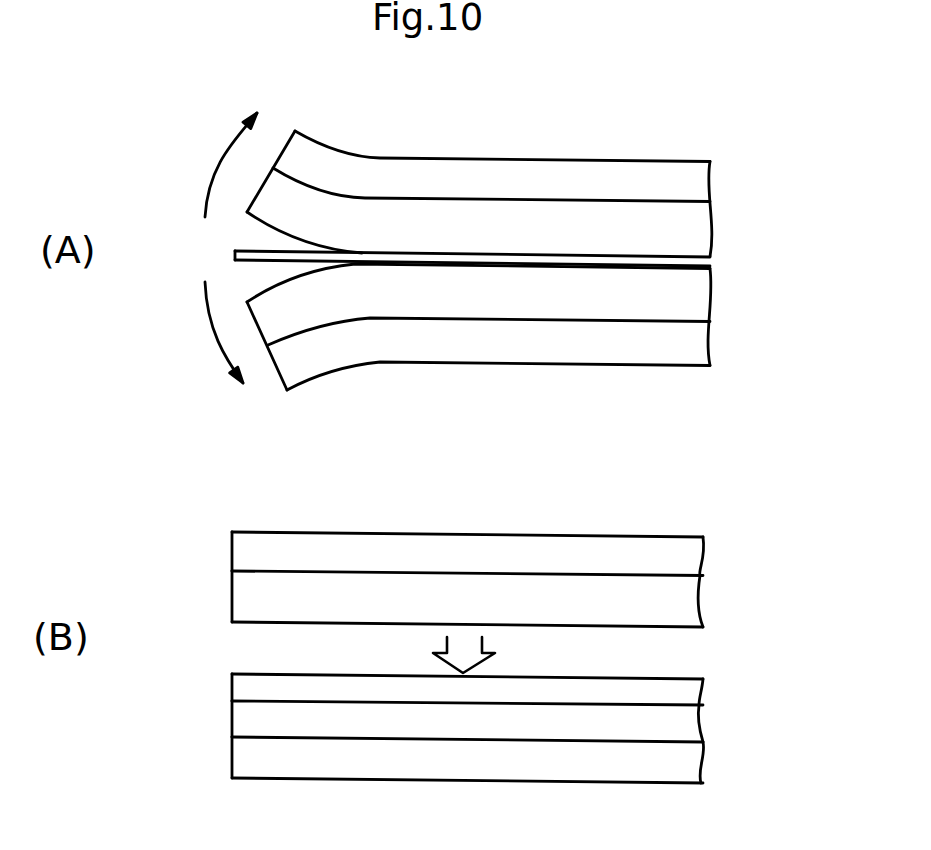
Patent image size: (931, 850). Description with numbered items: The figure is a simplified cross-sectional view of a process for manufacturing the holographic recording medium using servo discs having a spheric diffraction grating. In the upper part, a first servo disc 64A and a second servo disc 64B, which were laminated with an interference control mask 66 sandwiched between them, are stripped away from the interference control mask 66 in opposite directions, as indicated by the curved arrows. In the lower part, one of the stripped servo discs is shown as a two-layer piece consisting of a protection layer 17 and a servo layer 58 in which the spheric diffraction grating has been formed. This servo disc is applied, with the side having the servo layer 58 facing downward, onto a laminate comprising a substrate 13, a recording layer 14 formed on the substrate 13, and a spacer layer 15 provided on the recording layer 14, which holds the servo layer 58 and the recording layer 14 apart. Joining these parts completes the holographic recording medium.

The first servo disc 64A is at (725, 162).
The second servo disc 64B is at (725, 270).
The interference control mask 66 is at (235, 255).
The protection layer 17 is at (242, 551).
The servo layer 58 is at (242, 597).
The spacer layer 15 is at (695, 694).
The recording layer 14 is at (690, 723).
The substrate 13 is at (687, 768).